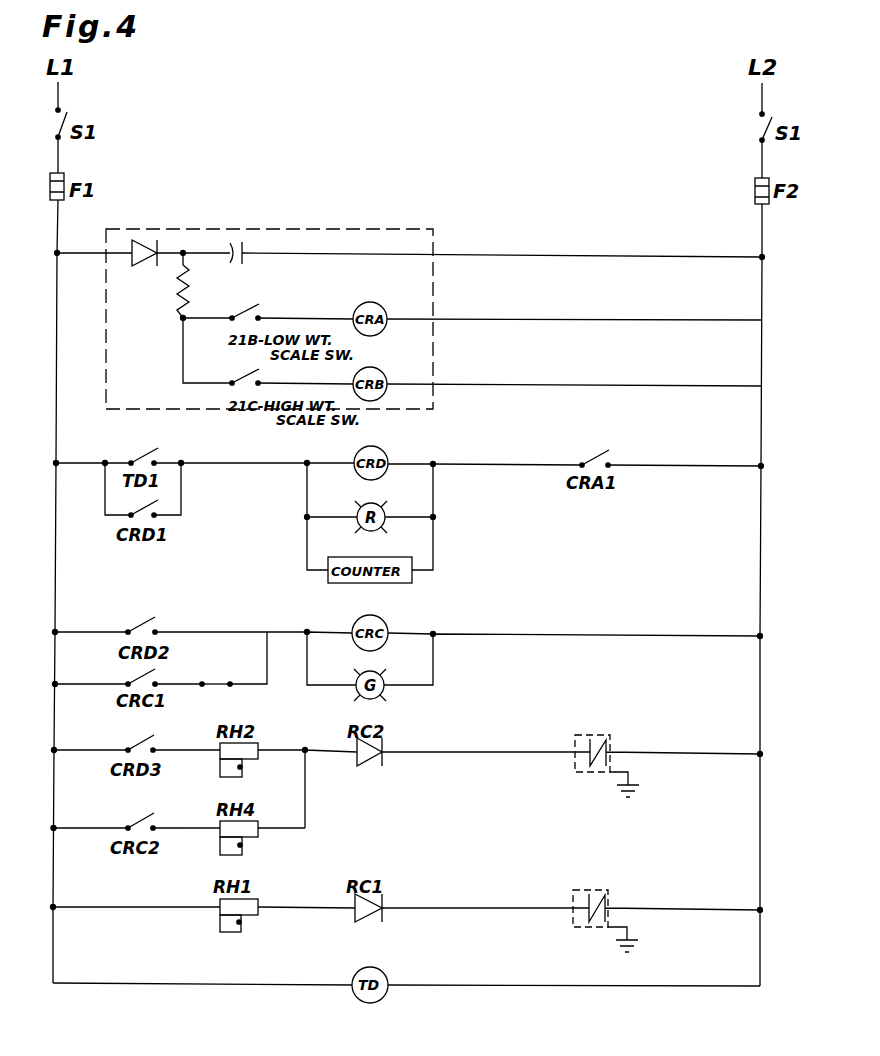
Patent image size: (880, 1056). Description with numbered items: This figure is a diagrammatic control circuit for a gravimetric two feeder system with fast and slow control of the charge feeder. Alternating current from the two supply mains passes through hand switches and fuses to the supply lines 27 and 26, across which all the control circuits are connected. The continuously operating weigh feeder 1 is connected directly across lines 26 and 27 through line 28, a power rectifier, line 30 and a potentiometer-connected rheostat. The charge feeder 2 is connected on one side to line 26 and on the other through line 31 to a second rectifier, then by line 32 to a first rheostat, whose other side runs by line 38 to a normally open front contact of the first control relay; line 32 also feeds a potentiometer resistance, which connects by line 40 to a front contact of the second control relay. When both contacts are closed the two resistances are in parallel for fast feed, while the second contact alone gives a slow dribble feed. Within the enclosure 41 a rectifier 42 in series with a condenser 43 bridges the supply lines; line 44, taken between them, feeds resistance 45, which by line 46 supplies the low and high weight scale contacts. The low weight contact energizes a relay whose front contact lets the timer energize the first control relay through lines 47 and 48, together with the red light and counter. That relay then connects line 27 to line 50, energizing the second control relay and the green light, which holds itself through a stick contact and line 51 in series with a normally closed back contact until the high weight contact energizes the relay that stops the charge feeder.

The weigh feeder 1 is at (576, 890).
The charge feeder 2 is at (578, 735).
The line 26 is at (762, 257).
The line 27 is at (57, 253).
The line 28 is at (471, 886).
The line 30 is at (311, 886).
The line 31 is at (470, 730).
The line 32 is at (316, 730).
The line 38 is at (196, 730).
The line 40 is at (196, 808).
The enclosure 41 is at (433, 229).
The rectifier 42 is at (134, 264).
The condenser 43 is at (243, 262).
The line 44 is at (183, 253).
The resistance 45 is at (189, 286).
The line 46 is at (183, 318).
The line 47 is at (433, 464).
The line 48 is at (181, 463).
The line 50 is at (267, 632).
The line 51 is at (202, 684).